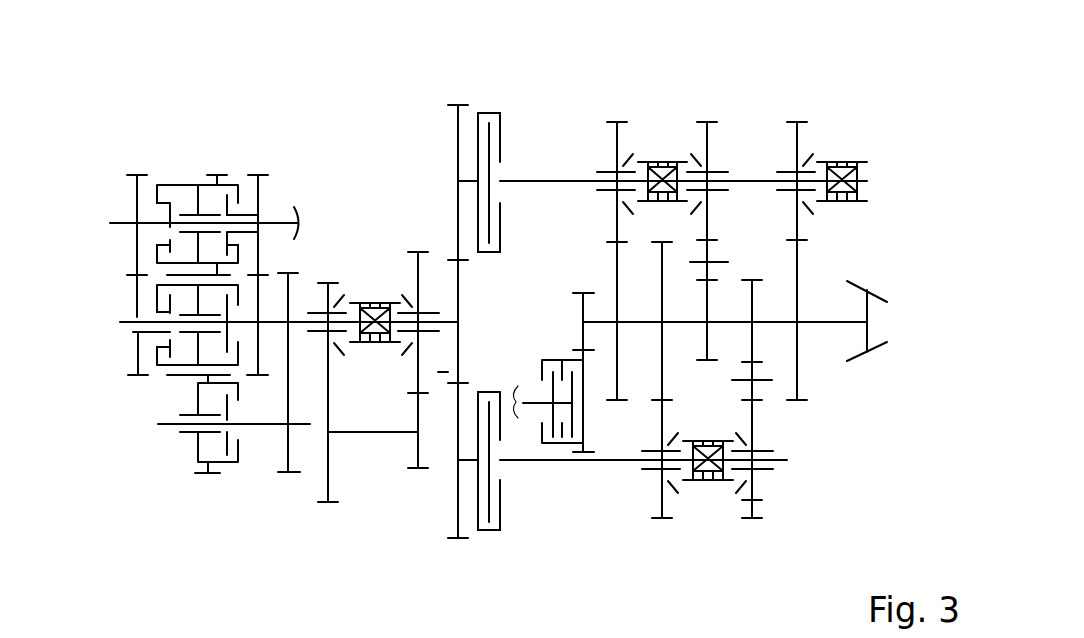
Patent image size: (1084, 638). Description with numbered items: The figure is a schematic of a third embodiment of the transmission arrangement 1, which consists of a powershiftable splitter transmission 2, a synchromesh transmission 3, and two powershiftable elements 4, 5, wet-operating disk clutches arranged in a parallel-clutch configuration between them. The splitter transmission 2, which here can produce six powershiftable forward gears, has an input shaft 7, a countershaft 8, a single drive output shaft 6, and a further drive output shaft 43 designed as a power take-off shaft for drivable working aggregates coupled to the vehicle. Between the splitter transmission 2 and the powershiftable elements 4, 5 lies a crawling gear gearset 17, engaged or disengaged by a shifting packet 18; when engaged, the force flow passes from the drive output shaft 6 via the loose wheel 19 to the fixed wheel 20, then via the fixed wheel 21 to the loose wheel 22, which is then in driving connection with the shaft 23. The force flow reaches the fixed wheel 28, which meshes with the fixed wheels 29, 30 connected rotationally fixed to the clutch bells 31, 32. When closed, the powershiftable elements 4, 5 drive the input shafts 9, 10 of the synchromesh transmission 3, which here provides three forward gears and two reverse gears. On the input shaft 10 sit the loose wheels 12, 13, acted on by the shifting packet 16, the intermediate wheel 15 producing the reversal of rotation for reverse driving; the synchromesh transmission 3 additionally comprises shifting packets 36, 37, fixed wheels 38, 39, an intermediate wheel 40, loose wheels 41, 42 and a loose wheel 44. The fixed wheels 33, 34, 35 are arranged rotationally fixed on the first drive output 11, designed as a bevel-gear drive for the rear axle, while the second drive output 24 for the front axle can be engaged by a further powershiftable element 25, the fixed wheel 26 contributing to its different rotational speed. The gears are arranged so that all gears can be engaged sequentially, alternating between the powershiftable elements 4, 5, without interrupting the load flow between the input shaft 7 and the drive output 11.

The transmission arrangement 1 is at (137, 125).
The splitter transmission 2 is at (190, 478).
The synchromesh transmission 3 is at (818, 522).
The powershiftable element 4 is at (490, 540).
The powershiftable element 5 is at (488, 108).
The drive output shaft 6 is at (304, 320).
The input shaft 7 is at (123, 322).
The countershaft 8 is at (130, 225).
The input shaft 9 is at (617, 465).
The input shaft 10 is at (582, 180).
The first drive output 11 is at (810, 317).
The loose wheel 12 is at (622, 150).
The loose wheel 13 is at (712, 133).
The intermediate wheel 15 is at (712, 247).
The shifting packet 16 is at (671, 152).
The crawling gear gearset 17 is at (352, 480).
The shifting packet 18 is at (374, 300).
The loose wheel 19 is at (340, 282).
The fixed wheel 20 is at (405, 372).
The fixed wheel 21 is at (425, 465).
The loose wheel 22 is at (445, 395).
The shaft 23 is at (428, 313).
The second drive output 24 is at (560, 443).
The further powershiftable element 25 is at (520, 405).
The fixed wheel 26 is at (580, 310).
The fixed wheel 28 is at (455, 353).
The fixed wheel 29 is at (458, 512).
The fixed wheel 30 is at (458, 142).
The clutch bell 31 is at (500, 507).
The clutch bell 32 is at (503, 133).
The fixed wheel 33 is at (620, 377).
The fixed wheel 34 is at (665, 372).
The fixed wheel 35 is at (710, 333).
The shifting packet 36 is at (724, 483).
The shifting packet 37 is at (848, 152).
The fixed wheel 38 is at (800, 283).
The fixed wheel 39 is at (758, 303).
The intermediate wheel 40 is at (755, 367).
The loose wheel 41 is at (795, 132).
The loose wheel 42 is at (755, 492).
The further drive output shaft 43 is at (277, 213).
The loose wheel 44 is at (708, 487).